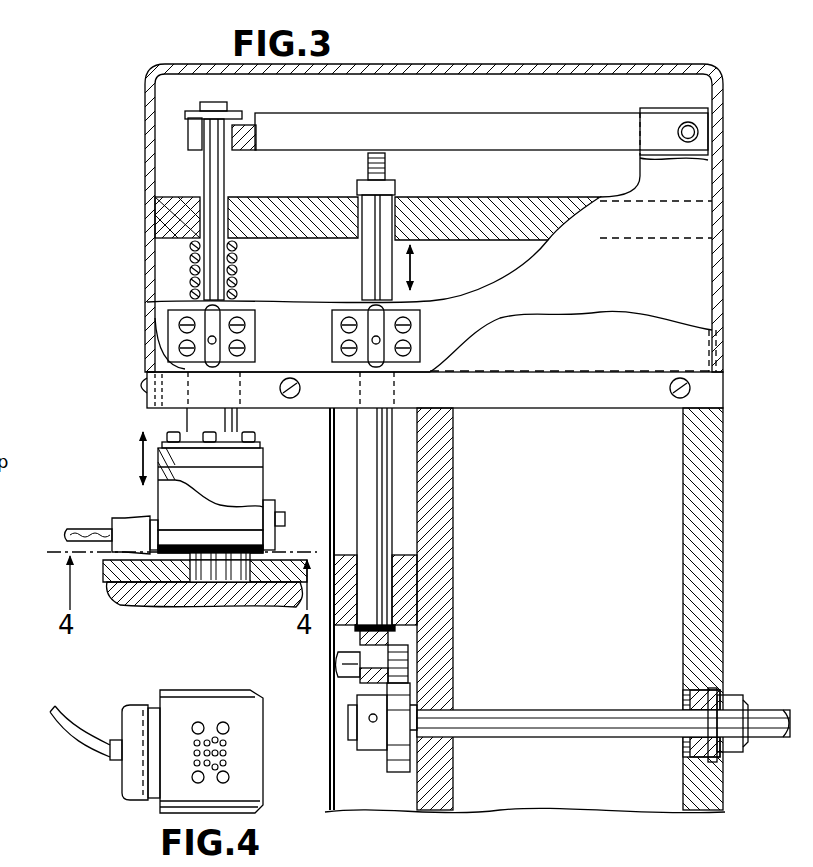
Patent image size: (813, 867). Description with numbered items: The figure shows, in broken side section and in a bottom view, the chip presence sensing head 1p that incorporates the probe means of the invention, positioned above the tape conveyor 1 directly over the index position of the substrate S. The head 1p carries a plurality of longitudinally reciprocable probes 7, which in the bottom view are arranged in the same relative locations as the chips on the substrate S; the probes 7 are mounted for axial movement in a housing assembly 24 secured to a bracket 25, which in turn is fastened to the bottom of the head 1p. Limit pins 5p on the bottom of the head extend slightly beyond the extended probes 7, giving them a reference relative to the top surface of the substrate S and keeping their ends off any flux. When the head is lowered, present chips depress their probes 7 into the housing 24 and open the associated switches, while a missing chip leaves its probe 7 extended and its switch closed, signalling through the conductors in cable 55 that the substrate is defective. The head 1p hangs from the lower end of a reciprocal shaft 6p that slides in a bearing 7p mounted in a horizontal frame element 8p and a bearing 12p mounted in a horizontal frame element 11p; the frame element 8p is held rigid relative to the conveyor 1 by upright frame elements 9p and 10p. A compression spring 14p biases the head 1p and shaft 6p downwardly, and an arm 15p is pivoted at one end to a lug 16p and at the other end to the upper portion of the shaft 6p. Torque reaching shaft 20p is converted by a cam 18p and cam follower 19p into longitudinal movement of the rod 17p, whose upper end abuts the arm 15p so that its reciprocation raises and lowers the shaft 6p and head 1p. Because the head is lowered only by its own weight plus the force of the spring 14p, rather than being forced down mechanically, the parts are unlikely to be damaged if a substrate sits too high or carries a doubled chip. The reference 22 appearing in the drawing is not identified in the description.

In FIG. 3, the tape conveyor 1 is at (240, 578).
In FIG. 3, the sensing head 1p is at (148, 505).
In FIG. 4, the limit pins 5p is at (223, 722).
In FIG. 3, the reciprocal shaft 6p is at (227, 182).
In FIG. 4, the probes 7 is at (226, 763).
In FIG. 3, the bearing 7p is at (178, 386).
In FIG. 3, the horizontal frame element 8p is at (160, 405).
In FIG. 3, the upright frame element 9p is at (456, 597).
In FIG. 3, the upright frame element 10p is at (680, 518).
In FIG. 3, the horizontal frame element 11p is at (287, 240).
In FIG. 3, the bearing 12p is at (185, 206).
In FIG. 3, the compression spring 14p is at (190, 281).
In FIG. 3, the arm 15p is at (443, 120).
In FIG. 3, the lug 16p is at (643, 155).
In FIG. 3, the rod 17p is at (393, 500).
In FIG. 3, the cam 18p is at (388, 760).
In FIG. 3, the cam follower 19p is at (405, 666).
In FIG. 3, the shaft 20p is at (530, 712).
In FIG. 3, the housing 22 is at (728, 361).
In FIG. 3, the housing assembly 24 is at (202, 540).
In FIG. 4, the housing assembly 24 is at (188, 690).
In FIG. 3, the bracket 25 is at (250, 487).
In FIG. 4, the cable 55 is at (64, 720).
In FIG. 3, the substrate S is at (195, 572).